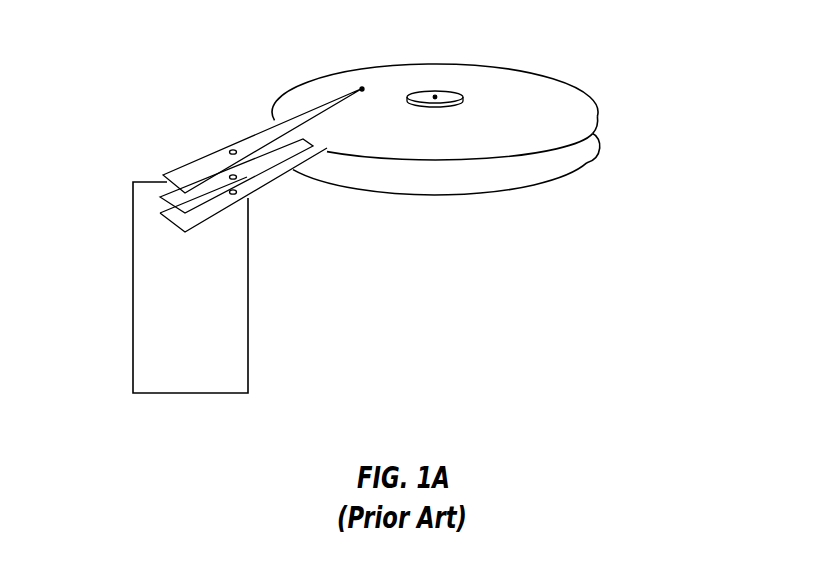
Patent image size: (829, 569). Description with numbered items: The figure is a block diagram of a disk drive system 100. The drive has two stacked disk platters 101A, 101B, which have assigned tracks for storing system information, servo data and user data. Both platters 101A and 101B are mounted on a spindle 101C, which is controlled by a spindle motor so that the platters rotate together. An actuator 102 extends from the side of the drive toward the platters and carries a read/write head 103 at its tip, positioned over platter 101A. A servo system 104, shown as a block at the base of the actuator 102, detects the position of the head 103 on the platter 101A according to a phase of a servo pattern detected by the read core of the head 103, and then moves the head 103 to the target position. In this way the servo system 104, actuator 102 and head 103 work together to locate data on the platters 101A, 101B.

The disk drive system 100 is at (150, 32).
The platter 101A is at (590, 93).
The platter 101B is at (588, 167).
The spindle 101C is at (436, 95).
The actuator 102 is at (220, 155).
The read/write head 103 is at (362, 88).
The servo system 104 is at (248, 365).